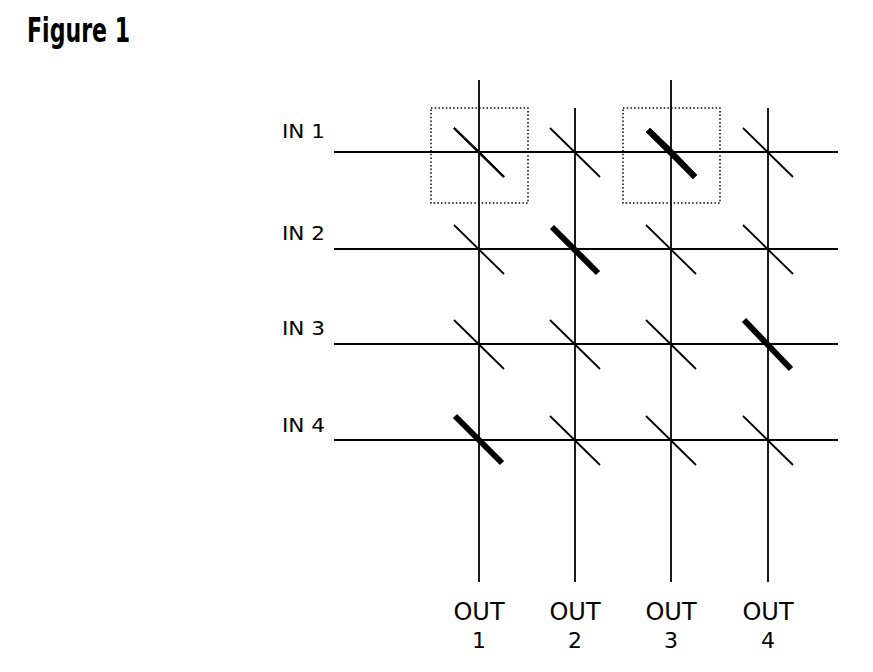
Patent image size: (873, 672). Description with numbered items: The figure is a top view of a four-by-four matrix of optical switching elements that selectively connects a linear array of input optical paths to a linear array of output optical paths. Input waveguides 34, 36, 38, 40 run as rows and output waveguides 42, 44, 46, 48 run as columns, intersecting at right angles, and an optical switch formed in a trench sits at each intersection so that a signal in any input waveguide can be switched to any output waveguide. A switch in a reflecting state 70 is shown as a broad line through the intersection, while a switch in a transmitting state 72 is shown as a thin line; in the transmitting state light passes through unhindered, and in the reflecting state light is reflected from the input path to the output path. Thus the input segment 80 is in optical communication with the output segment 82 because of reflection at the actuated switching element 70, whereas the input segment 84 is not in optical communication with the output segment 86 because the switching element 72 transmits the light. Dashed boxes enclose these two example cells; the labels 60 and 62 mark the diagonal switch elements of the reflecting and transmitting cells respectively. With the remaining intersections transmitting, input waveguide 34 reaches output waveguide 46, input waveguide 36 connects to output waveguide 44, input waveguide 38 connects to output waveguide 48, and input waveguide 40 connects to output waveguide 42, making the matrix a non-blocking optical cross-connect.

The input waveguide 34 is at (380, 142).
The input waveguide 36 is at (390, 242).
The input waveguide 38 is at (400, 333).
The input waveguide 40 is at (400, 430).
The output waveguide 42 is at (472, 557).
The output waveguide 44 is at (568, 557).
The output waveguide 46 is at (665, 557).
The output waveguide 48 is at (762, 557).
The switching element in a transmitting state 72 is at (453, 123).
The mirror element (off state) 62 is at (503, 130).
The input segment 84 is at (452, 148).
The output segment 86 is at (492, 192).
The switching element in a reflecting state 70 is at (645, 123).
The mirror element (on state) 60 is at (695, 132).
The input segment 80 is at (638, 150).
The output segment 82 is at (677, 192).